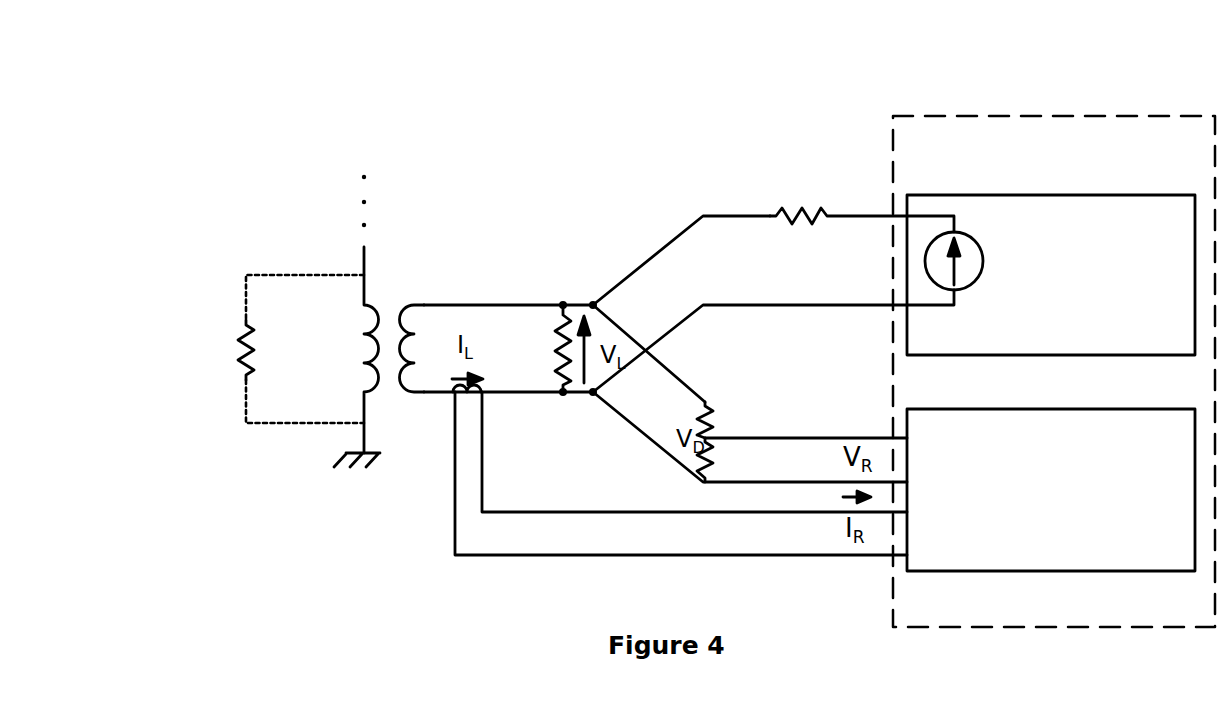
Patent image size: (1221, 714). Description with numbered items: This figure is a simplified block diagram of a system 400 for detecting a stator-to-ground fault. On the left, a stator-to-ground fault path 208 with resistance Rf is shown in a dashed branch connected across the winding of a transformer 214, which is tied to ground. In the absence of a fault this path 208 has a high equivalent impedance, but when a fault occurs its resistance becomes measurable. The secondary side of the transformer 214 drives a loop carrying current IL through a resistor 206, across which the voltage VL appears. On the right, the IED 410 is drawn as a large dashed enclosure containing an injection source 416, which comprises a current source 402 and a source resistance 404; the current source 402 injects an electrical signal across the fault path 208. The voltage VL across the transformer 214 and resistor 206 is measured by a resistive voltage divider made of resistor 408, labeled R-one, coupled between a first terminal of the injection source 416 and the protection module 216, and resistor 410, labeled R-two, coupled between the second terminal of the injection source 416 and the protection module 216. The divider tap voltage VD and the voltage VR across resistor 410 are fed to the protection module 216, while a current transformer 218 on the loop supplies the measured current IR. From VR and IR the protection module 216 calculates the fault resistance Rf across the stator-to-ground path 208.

The system 400 is at (872, 36).
The IED 410 is at (1077, 115).
The current source 402 is at (970, 233).
The source resistance 404 is at (790, 210).
The resistor 206 is at (560, 330).
The resistor 408 is at (710, 402).
The stator-to-ground fault path 208 is at (240, 368).
The transformer 214 is at (367, 346).
The current transformer 218 is at (453, 400).
The injection source 416 is at (1051, 254).
The protection module 216 is at (1051, 490).